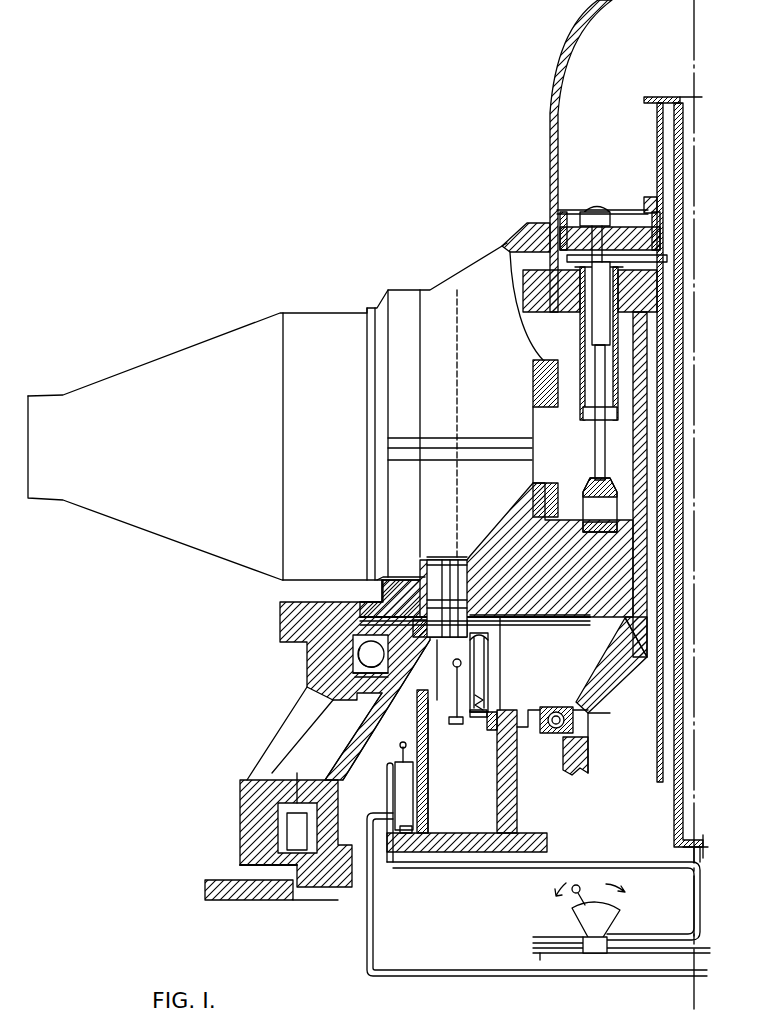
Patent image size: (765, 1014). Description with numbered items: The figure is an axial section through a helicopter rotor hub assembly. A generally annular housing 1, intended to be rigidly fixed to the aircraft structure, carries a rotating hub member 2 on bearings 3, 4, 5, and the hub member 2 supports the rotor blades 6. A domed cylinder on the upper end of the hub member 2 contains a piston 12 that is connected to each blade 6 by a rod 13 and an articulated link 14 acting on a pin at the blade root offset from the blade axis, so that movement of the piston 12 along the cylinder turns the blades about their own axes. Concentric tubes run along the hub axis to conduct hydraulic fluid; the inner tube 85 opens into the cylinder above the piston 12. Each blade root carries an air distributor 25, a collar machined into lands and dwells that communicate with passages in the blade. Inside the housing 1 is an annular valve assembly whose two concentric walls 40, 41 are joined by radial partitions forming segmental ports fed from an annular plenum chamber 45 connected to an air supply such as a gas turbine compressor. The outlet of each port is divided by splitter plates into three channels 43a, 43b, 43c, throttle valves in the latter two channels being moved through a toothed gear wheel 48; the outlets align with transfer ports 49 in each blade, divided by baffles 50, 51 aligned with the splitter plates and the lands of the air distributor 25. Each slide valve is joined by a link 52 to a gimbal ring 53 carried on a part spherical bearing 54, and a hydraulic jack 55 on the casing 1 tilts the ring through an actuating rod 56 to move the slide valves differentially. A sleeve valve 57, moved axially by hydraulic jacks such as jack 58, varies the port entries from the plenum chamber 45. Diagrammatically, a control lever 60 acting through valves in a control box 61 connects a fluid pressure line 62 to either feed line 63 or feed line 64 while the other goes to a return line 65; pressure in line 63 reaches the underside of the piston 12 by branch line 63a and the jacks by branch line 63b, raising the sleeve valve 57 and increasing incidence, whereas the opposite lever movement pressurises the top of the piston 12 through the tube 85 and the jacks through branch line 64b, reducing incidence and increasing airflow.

The annular housing 1 is at (514, 817).
The rotating hub member 2 is at (630, 625).
The bearing 3 is at (368, 657).
The bearing 4 is at (295, 830).
The bearing 5 is at (556, 730).
The rotor blade 6 is at (216, 352).
The piston 12 is at (587, 233).
The rod 13 is at (597, 325).
The articulated link 14 is at (598, 453).
The air distributor 25 is at (448, 557).
The concentric wall 40 is at (358, 708).
The concentric wall 41 is at (472, 678).
The channel 43a is at (470, 623).
The channel 43b is at (460, 625).
The channel 43c is at (455, 640).
The annular plenum chamber 45 is at (378, 793).
The toothed gear wheel 48 is at (440, 640).
The transfer port 49 is at (460, 600).
The baffle 50 is at (440, 607).
The baffle 51 is at (440, 605).
The link 52 is at (455, 712).
The gimbal ring 53 is at (487, 732).
The part spherical bearing 54 is at (512, 758).
The hydraulic jack 55 is at (483, 692).
The actuating rod 56 is at (497, 708).
The sleeve valve 57 is at (422, 806).
The hydraulic jack 58 is at (403, 795).
The control lever 60 is at (576, 885).
The control box 61 is at (598, 922).
The fluid pressure line 62 is at (553, 925).
The feed line 63 is at (670, 912).
The branch line 63a is at (690, 857).
The branch line 63b is at (475, 868).
The feed line 64 is at (672, 948).
The branch line 64b is at (462, 975).
The return line 65 is at (560, 948).
The inner tube 85 is at (683, 816).